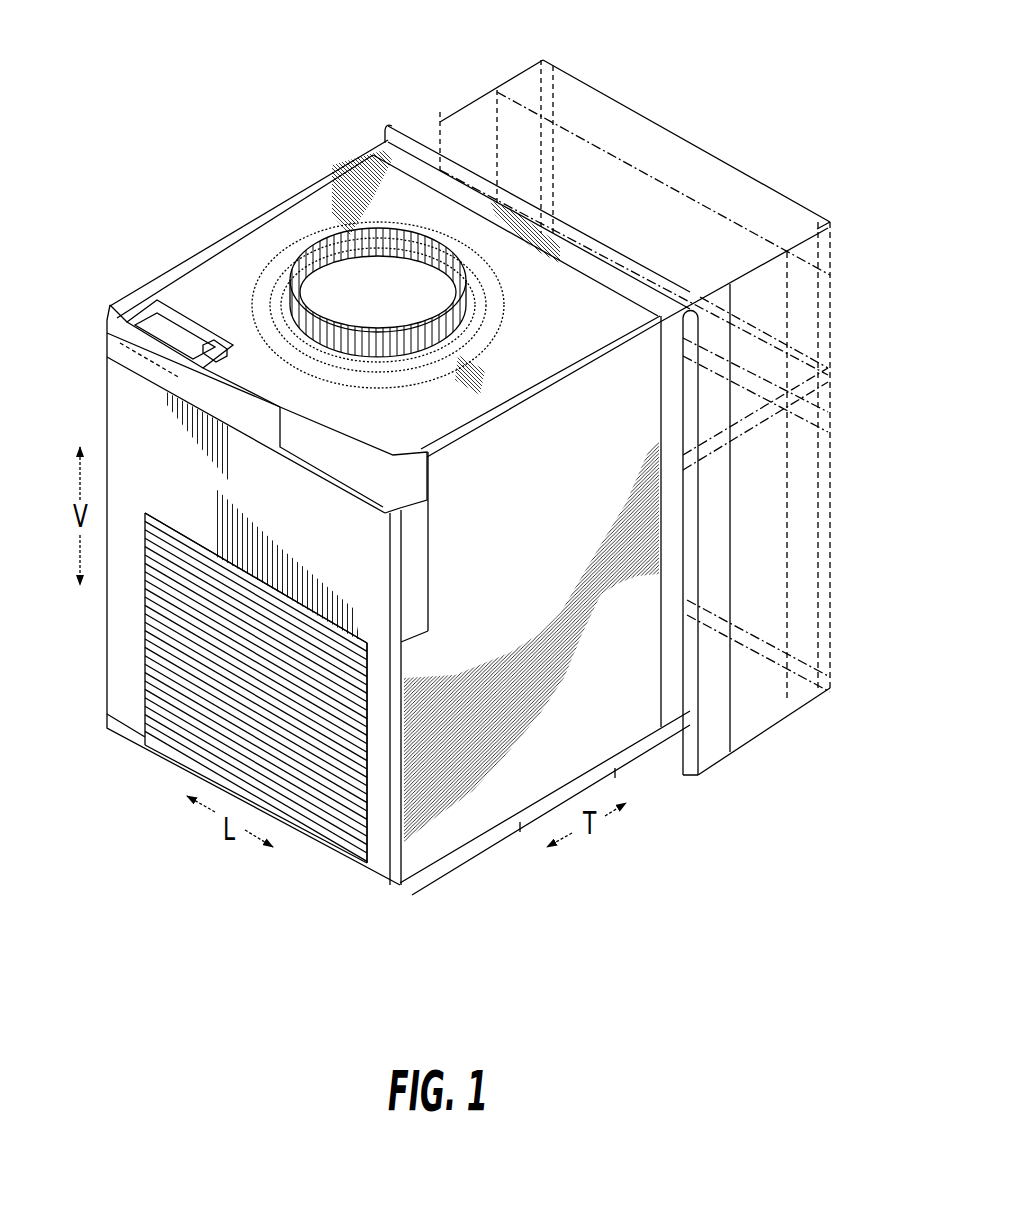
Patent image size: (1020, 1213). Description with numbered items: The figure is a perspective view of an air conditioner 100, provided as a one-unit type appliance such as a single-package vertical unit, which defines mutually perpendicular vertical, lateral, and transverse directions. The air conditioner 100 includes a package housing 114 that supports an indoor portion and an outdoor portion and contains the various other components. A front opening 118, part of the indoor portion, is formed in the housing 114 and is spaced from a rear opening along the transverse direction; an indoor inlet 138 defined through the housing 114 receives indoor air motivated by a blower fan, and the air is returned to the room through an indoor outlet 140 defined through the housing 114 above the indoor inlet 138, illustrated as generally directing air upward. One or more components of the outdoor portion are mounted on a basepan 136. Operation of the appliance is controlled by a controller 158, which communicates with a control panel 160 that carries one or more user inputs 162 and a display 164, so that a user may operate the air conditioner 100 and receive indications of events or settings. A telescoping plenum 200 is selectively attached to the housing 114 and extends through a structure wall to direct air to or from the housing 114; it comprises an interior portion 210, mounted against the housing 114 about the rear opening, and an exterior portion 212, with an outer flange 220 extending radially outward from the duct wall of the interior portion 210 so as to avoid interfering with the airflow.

The air conditioner 100 is at (160, 109).
The package housing 114 is at (240, 258).
The front opening 118 is at (333, 832).
The basepan 136 is at (432, 870).
The indoor inlet 138 is at (188, 738).
The indoor outlet 140 is at (358, 264).
The controller 158 is at (122, 345).
The control panel 160 is at (126, 301).
The user inputs 162 is at (206, 352).
The display 164 is at (157, 328).
The plenum 200 is at (468, 60).
The interior portion 210 is at (440, 120).
The exterior portion 212 is at (532, 58).
The outer flange 220 is at (390, 125).